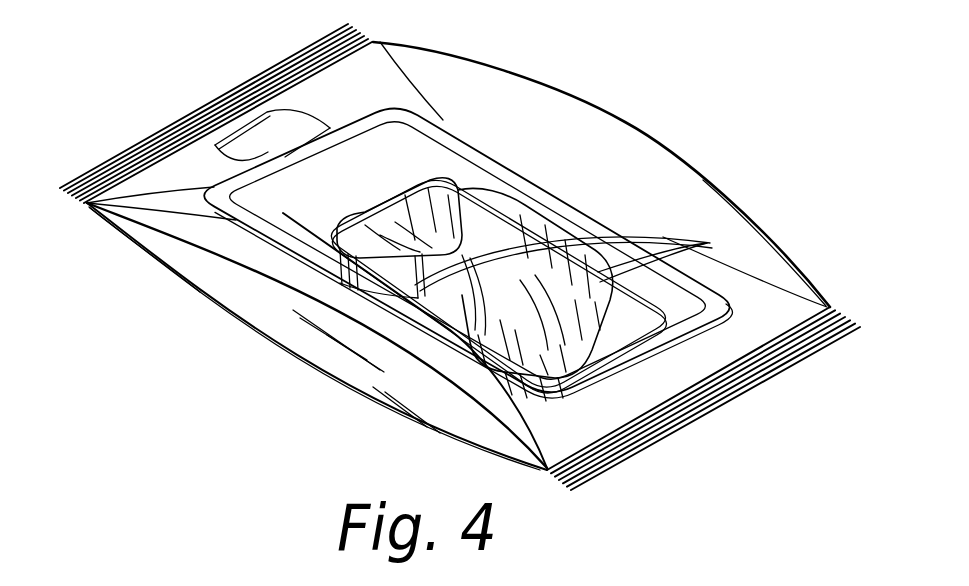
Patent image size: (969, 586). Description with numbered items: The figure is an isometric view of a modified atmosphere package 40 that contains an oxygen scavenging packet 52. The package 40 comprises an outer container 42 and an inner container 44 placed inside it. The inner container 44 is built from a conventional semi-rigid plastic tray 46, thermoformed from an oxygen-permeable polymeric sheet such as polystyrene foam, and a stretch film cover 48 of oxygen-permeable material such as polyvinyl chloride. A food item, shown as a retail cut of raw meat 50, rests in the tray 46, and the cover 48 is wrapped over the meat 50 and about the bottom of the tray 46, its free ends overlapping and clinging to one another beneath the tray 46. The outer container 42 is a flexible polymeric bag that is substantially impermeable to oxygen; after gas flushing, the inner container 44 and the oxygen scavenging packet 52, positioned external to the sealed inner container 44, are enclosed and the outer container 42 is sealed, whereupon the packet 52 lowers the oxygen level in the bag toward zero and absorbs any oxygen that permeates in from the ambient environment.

The modified atmosphere package 40 is at (628, 78).
The outer container 42 is at (670, 177).
The inner container 44 is at (271, 262).
The tray 46 is at (383, 325).
The cover 48 is at (197, 183).
The retail cut of raw meat 50 is at (583, 313).
The oxygen scavenging packet 52 is at (262, 137).